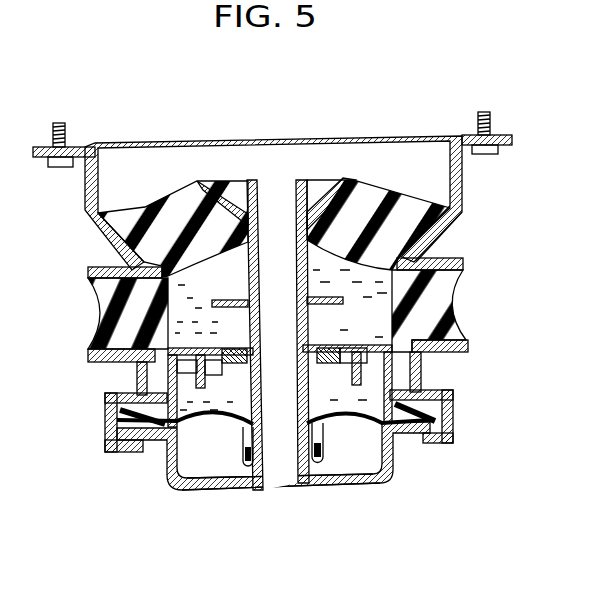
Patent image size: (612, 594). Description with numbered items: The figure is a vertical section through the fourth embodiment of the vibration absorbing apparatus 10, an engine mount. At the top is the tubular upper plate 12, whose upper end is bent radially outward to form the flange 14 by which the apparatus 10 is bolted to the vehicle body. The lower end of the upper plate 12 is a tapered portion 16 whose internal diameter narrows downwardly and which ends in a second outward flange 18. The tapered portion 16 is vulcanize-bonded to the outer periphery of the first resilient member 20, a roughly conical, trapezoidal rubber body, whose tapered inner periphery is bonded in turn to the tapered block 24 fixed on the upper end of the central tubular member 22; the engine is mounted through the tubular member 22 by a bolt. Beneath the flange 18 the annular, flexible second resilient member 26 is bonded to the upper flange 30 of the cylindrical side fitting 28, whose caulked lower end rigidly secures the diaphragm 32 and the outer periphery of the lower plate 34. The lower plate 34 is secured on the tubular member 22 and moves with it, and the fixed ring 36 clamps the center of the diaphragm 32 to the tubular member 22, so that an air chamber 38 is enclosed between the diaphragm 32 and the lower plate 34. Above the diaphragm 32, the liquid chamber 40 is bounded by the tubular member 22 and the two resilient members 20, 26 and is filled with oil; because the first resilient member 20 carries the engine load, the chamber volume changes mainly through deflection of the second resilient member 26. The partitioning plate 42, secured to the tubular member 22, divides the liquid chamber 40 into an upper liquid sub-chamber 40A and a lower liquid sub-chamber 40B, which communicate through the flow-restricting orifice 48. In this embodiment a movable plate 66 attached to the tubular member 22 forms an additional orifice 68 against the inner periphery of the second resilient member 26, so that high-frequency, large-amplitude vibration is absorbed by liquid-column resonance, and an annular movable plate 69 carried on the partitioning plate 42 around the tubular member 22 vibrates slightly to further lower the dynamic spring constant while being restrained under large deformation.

The vibration absorbing apparatus 10 is at (431, 127).
The upper plate 12 is at (462, 173).
The flange 14 is at (500, 136).
The tapered portion 16 is at (443, 228).
The flange 18 is at (432, 252).
The first resilient member 20 is at (367, 207).
The tubular member 22 is at (298, 179).
The tapered block 24 is at (345, 179).
The second resilient member 26 is at (440, 299).
The side fitting 28 is at (424, 380).
The upper flange 30 is at (470, 347).
The diaphragm 32 is at (172, 462).
The lower plate 34 is at (324, 486).
The fixed ring 36 is at (250, 470).
The air chamber 38 is at (355, 452).
The liquid chamber 40 is at (168, 312).
The upper liquid sub-chamber 40A is at (245, 293).
The lower liquid sub-chamber 40B is at (248, 392).
The partitioning plate 42 is at (356, 345).
The orifice 48 is at (138, 378).
The movable plate 66 is at (352, 330).
The orifice 68 is at (460, 276).
The movable plate 69 is at (229, 349).